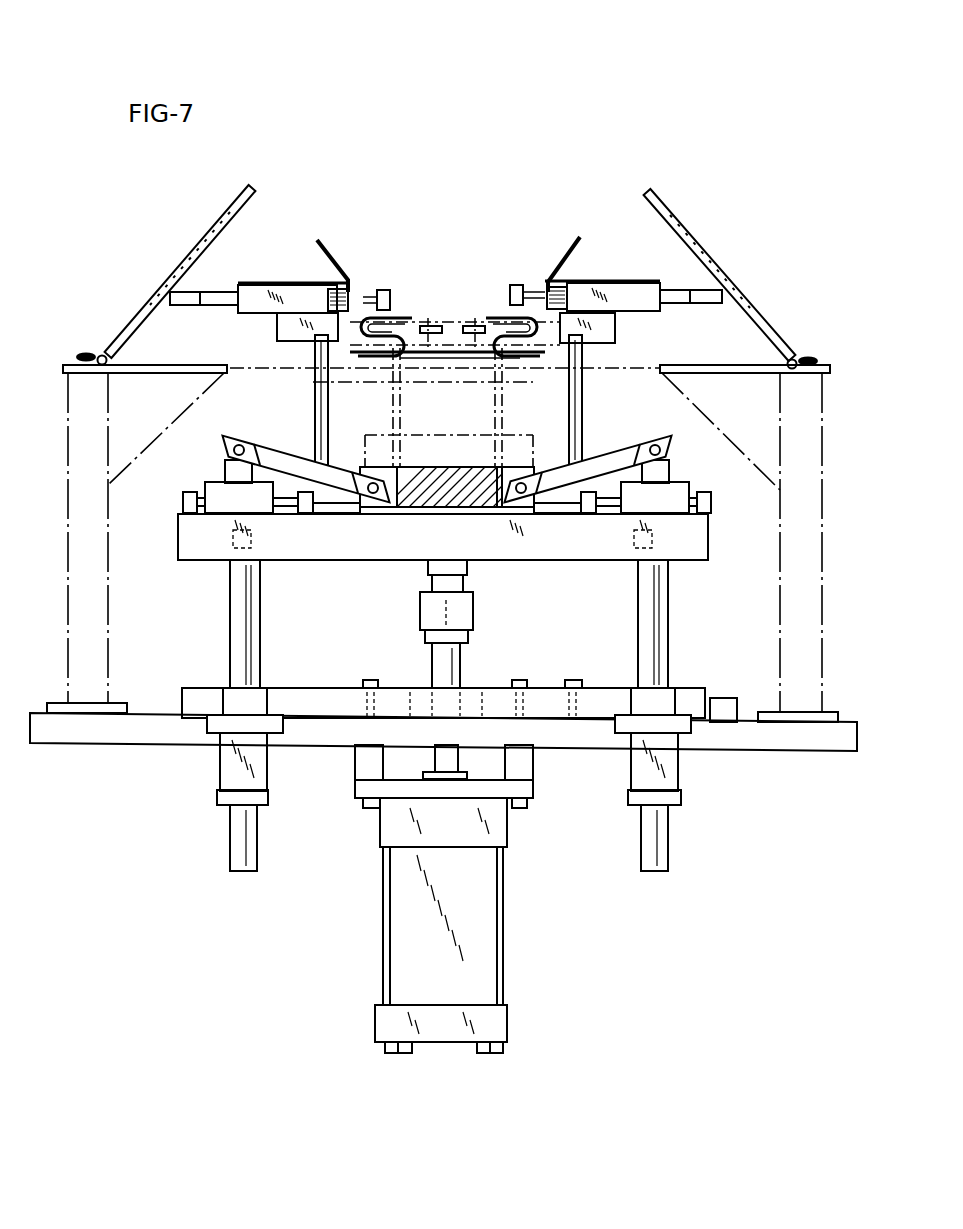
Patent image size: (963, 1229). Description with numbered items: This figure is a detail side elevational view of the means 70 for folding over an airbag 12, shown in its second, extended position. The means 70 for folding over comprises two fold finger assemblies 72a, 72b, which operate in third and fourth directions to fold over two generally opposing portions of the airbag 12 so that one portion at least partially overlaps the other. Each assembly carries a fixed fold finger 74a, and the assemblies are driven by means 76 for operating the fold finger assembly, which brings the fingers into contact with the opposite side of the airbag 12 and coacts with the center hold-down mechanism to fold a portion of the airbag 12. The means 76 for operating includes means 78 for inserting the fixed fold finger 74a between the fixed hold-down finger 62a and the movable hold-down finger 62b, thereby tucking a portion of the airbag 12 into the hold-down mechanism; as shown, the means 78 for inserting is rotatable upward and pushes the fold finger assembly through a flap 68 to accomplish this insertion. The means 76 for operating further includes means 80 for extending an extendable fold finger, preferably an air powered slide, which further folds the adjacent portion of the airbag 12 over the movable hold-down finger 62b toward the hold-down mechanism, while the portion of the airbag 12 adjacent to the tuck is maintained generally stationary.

The airbag 12 is at (367, 280).
The fixed hold-down finger 62a is at (335, 348).
The movable hold-down finger 62b is at (477, 315).
The flap 68 is at (193, 258).
The means for folding over 70 is at (300, 390).
The fold finger assembly 72a is at (238, 318).
The fold finger assembly 72b is at (645, 318).
The fixed fold finger 74a is at (400, 310).
The means for operating the fold finger assembly 76 is at (530, 566).
The means for inserting 78 is at (331, 400).
The means for extending 80 is at (257, 287).